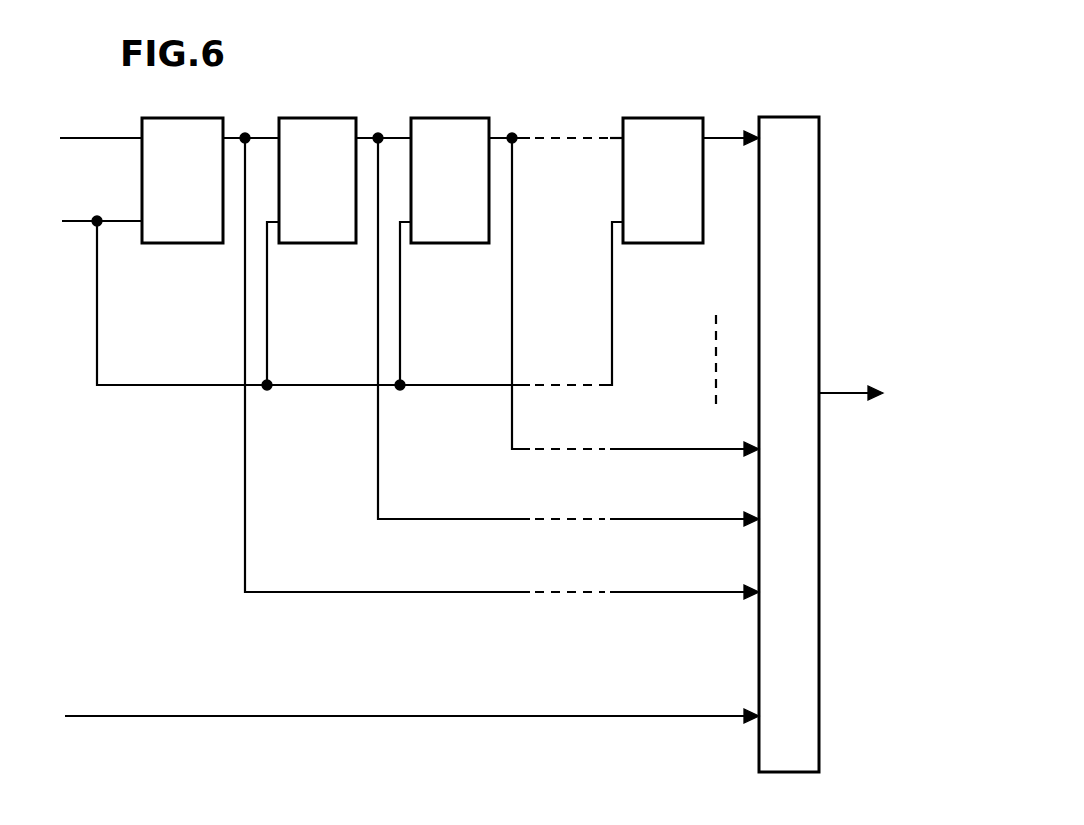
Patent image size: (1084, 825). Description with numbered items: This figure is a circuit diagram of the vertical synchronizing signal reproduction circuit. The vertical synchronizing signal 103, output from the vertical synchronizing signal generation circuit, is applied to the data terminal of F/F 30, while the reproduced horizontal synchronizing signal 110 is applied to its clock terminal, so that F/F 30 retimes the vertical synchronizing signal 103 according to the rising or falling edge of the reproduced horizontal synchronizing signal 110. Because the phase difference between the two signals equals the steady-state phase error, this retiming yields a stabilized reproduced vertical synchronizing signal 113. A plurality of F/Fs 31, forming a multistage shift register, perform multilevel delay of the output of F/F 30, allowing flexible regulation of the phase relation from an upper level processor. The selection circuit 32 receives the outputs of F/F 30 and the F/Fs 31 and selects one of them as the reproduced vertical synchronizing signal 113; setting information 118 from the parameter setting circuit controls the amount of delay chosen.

The vertical synchronizing signal 103 is at (113, 138).
The reproduced horizontal synchronizing signal 110 is at (123, 220).
The F/F 30 is at (174, 118).
The F/Fs 31 is at (289, 118).
The selection circuit 32 is at (818, 117).
The reproduced vertical synchronizing signal 113 is at (866, 371).
The setting information 118 is at (100, 716).